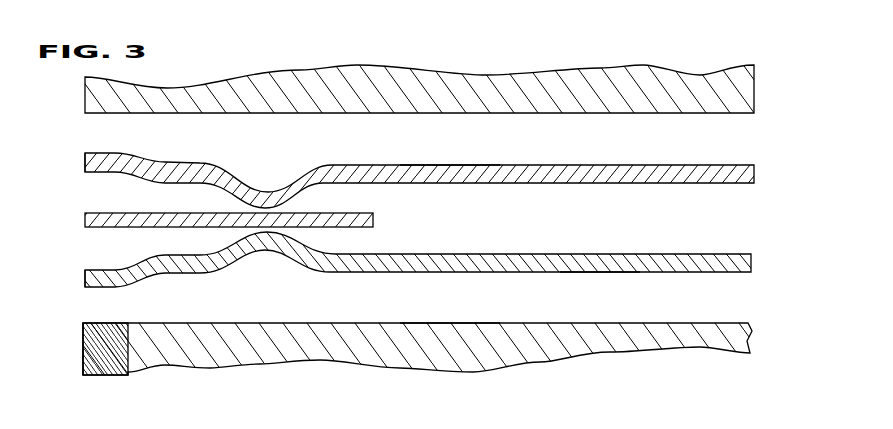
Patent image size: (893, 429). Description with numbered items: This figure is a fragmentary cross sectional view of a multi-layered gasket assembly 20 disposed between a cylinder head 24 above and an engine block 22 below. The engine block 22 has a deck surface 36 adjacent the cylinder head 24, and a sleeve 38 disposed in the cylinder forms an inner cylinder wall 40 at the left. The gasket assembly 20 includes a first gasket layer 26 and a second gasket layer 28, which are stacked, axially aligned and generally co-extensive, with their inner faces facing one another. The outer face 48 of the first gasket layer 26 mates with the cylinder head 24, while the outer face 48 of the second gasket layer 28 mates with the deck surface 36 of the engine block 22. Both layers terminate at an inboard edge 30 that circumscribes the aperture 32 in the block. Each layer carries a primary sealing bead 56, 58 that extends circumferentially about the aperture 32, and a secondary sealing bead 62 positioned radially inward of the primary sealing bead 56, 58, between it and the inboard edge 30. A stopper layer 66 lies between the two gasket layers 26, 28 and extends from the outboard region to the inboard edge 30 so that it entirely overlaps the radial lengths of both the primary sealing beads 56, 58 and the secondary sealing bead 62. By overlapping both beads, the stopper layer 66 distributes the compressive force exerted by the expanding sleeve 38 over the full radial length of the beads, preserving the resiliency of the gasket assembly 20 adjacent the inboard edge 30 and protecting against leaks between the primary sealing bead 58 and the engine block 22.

The gasket assembly 20 is at (624, 208).
The engine block 22 is at (409, 351).
The cylinder head 24 is at (409, 101).
The first gasket layer 26 is at (575, 166).
The second gasket layer 28 is at (548, 255).
The inboard edge 30 is at (82, 163).
The aperture 32 is at (19, 215).
The deck surface 36 is at (451, 320).
The sleeve 38 is at (97, 365).
The inner cylinder wall 40 is at (80, 357).
The outer face 48 is at (443, 165).
The primary sealing bead 56 is at (200, 163).
The primary sealing bead 58 is at (200, 281).
The secondary sealing bead 62 is at (165, 153).
The stopper layer 66 is at (373, 220).